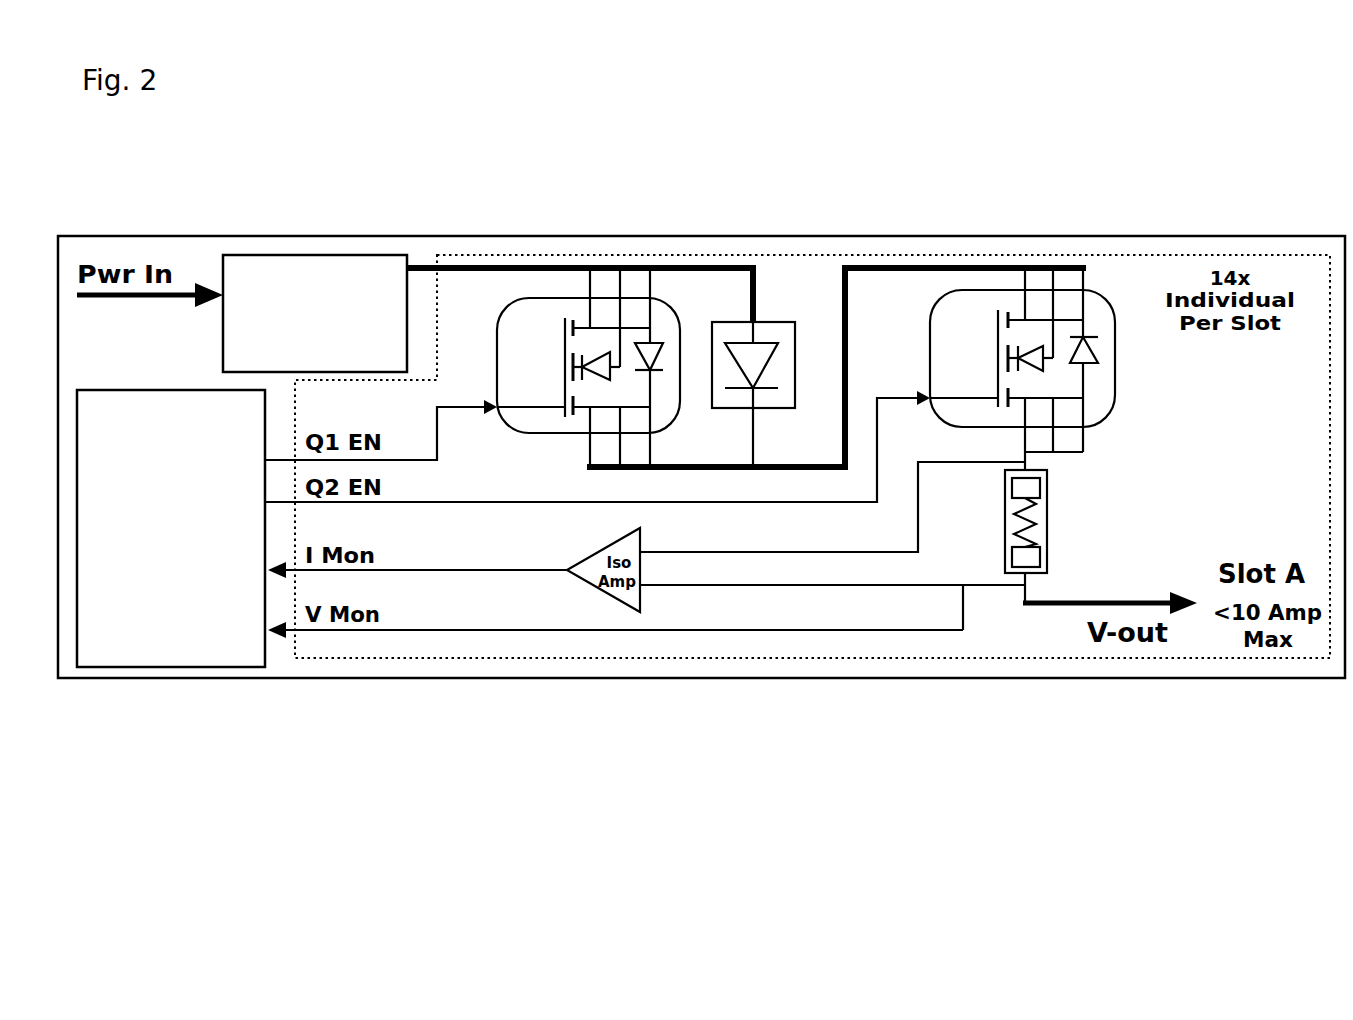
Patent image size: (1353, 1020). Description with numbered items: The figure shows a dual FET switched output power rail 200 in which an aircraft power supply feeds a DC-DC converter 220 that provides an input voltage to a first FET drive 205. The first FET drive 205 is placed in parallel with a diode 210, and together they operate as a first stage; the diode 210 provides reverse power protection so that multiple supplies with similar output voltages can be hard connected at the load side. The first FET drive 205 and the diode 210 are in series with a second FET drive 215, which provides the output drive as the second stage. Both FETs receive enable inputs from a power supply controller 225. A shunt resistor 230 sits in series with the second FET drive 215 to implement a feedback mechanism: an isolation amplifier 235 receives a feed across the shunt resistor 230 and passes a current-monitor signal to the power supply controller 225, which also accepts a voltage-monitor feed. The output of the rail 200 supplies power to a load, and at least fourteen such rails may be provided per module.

The switched output power rail 200 is at (788, 255).
The first FET drive Q1 205 is at (530, 255).
The diode D1 210 is at (722, 255).
The second FET drive Q2 215 is at (1023, 255).
The DC-DC converter 220 is at (330, 268).
The power supply controller 225 is at (135, 653).
The shunt resistor 230 is at (1055, 492).
The isolation amplifier 235 is at (658, 658).